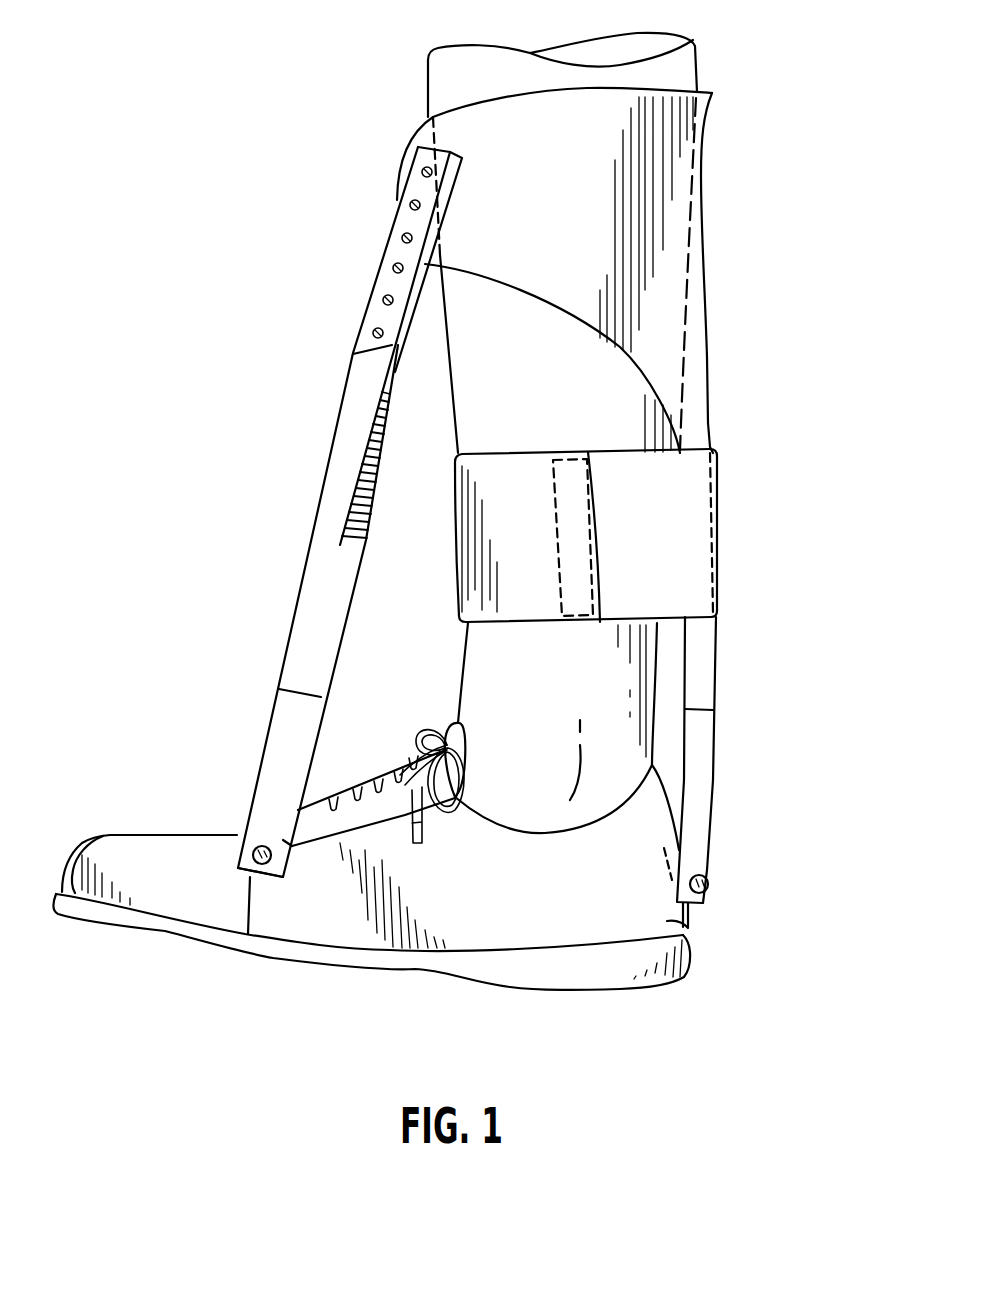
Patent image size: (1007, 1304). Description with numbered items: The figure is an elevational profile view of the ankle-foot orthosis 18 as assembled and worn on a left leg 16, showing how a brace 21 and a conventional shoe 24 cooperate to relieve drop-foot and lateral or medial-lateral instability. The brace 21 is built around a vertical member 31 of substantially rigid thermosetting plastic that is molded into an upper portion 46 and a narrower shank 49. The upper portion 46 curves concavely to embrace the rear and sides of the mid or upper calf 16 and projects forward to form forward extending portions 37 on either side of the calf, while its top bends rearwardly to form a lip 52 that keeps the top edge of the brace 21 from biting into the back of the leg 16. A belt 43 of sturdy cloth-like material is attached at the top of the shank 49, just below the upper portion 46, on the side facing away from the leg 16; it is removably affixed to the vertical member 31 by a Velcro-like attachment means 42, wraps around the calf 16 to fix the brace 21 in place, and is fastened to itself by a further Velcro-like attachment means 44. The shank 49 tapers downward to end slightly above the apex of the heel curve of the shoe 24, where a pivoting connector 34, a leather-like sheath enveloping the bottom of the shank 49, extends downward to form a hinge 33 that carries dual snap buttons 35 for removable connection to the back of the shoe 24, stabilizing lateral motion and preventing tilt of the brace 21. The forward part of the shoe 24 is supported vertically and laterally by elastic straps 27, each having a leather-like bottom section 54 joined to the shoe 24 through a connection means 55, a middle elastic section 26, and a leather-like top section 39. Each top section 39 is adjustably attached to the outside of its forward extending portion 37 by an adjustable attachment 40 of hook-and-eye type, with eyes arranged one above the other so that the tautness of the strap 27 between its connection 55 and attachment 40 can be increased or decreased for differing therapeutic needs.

The leg 16 is at (682, 74).
The ankle-foot orthosis 18 is at (388, 158).
The brace 21 is at (705, 185).
The shoe 24 is at (688, 928).
The middle elastic section 26 is at (325, 613).
The elastic straps 27 is at (348, 508).
The vertical member 31 is at (697, 400).
The hinge 33 is at (700, 851).
The pivoting connector 34 is at (718, 787).
The dual snap buttons 35 is at (710, 886).
The forward extending portions 37 is at (422, 131).
The top section 39 is at (363, 345).
The adjustable attachment 40 is at (411, 236).
The Velcro-like attachment means 42 is at (720, 490).
The belt 43 is at (695, 586).
The Velcro-like attachment means 44 is at (583, 578).
The upper portion 46 is at (708, 240).
The shank 49 is at (720, 672).
The lip 52 is at (706, 100).
The bottom section 54 is at (280, 748).
The connection means 55 is at (253, 849).